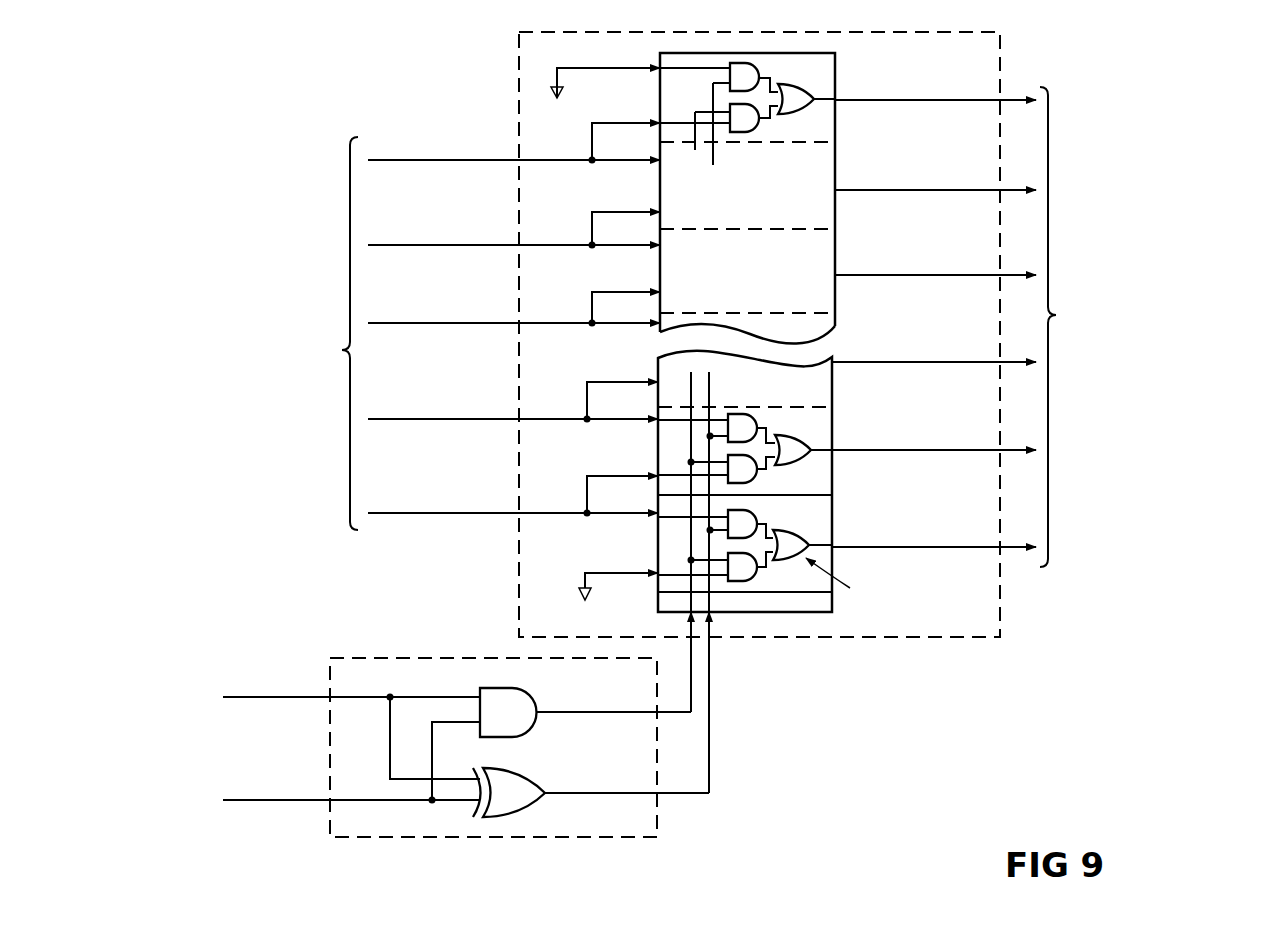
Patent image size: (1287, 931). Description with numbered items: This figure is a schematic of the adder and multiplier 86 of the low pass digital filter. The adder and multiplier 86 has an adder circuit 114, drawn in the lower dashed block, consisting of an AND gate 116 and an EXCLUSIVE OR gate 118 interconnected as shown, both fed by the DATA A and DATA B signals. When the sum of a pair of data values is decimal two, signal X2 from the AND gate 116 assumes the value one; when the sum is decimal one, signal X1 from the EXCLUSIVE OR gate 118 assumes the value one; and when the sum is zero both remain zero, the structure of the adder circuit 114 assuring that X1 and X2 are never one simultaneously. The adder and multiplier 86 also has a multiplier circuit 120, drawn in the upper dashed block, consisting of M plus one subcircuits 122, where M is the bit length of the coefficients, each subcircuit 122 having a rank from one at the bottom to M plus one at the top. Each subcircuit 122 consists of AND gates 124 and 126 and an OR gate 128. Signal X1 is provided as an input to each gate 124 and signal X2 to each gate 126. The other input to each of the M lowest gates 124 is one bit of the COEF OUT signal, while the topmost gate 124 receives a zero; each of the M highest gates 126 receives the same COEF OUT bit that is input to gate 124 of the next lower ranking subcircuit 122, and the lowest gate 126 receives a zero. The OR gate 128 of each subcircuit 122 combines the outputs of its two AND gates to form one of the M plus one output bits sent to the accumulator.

The adder and multiplier 86 is at (979, 777).
The multiplier circuit 120 is at (1003, 72).
The subcircuit 122 is at (835, 508).
The AND gate 124 is at (746, 513).
The AND gate 126 is at (756, 478).
The OR gate 128 is at (792, 543).
The adder circuit 114 is at (657, 822).
The AND gate 116 is at (530, 692).
The EXCLUSIVE OR gate 118 is at (530, 774).